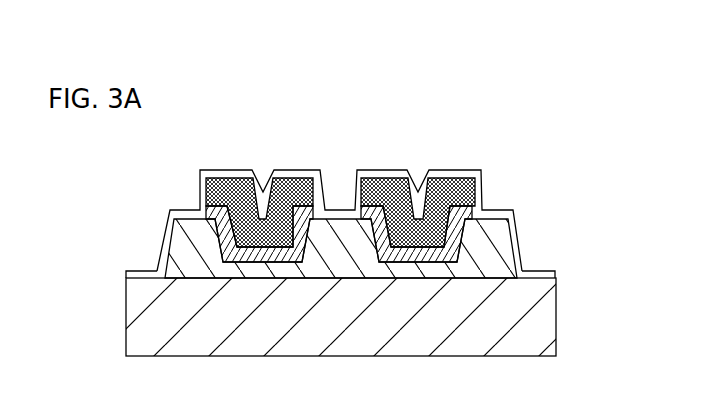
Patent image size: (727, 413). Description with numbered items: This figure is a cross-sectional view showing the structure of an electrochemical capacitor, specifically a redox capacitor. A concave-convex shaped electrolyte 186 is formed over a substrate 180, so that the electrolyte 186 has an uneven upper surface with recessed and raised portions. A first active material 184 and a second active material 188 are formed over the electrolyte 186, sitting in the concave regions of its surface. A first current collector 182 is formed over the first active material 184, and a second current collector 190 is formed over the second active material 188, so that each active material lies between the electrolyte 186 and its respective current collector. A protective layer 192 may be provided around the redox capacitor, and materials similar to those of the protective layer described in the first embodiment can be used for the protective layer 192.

The substrate 180 is at (320, 300).
The first current collector 182 is at (286, 205).
The first active material 184 is at (228, 206).
The electrolyte 186 is at (337, 228).
The second active material 188 is at (397, 235).
The second current collector 190 is at (460, 173).
The protective layer 192 is at (545, 272).